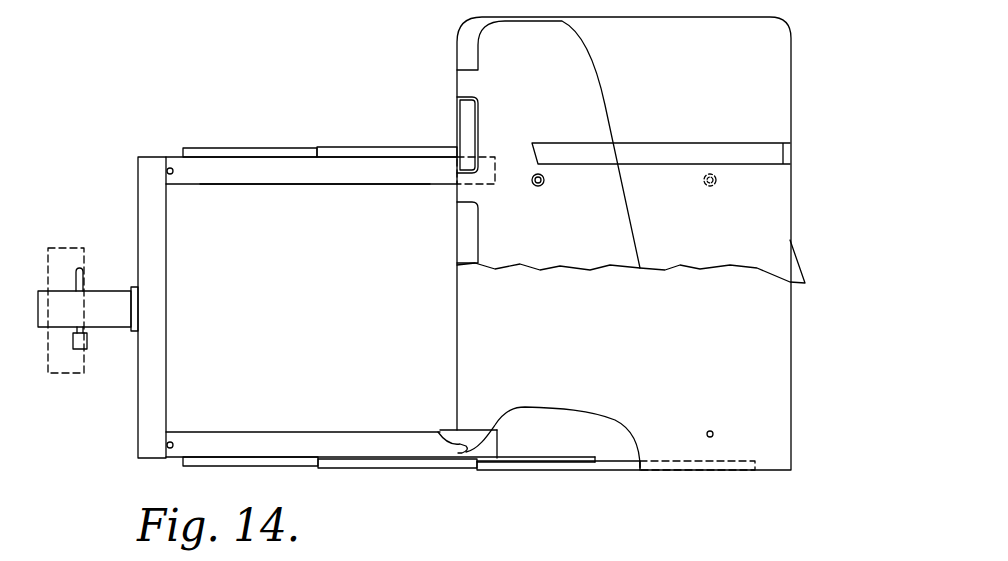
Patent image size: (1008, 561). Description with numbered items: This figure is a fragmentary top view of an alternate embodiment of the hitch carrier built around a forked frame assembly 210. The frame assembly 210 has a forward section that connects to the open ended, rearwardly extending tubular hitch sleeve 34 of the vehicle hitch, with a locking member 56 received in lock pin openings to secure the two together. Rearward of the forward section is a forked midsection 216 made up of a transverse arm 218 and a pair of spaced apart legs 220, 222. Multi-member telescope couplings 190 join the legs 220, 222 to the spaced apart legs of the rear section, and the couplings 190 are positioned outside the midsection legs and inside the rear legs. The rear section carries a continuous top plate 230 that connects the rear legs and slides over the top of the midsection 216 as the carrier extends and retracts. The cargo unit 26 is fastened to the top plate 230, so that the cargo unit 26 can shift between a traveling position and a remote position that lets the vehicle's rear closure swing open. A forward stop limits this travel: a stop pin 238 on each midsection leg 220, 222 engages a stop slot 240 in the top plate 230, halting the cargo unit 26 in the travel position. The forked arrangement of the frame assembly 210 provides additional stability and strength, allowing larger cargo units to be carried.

The cargo unit 26 is at (772, 58).
The hitch sleeve 34 is at (108, 300).
The locking member 56 is at (87, 343).
The multi-member telescope couplings 190 is at (403, 148).
The alternate frame assembly 210 is at (268, 104).
The forked midsection 216 is at (122, 138).
The transverse arm 218 is at (150, 291).
The midsection leg 220 is at (265, 173).
The midsection leg 222 is at (247, 437).
The top plate 230 is at (690, 355).
The stop pin 238 is at (167, 448).
The stop slot 240 is at (448, 445).